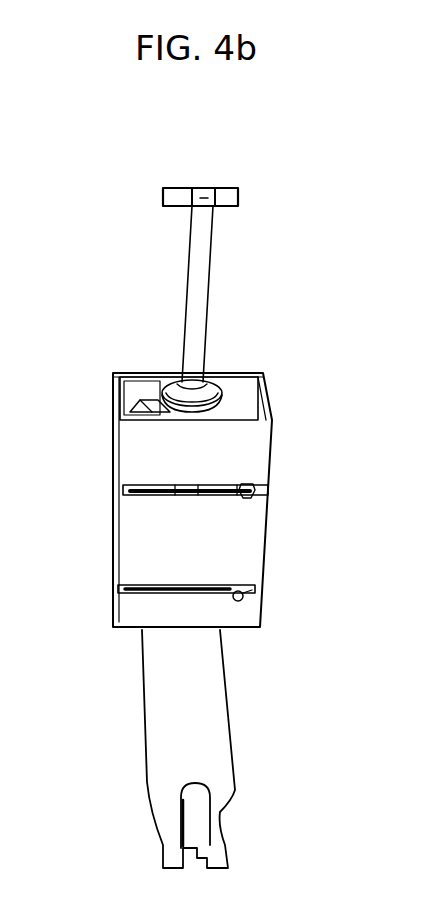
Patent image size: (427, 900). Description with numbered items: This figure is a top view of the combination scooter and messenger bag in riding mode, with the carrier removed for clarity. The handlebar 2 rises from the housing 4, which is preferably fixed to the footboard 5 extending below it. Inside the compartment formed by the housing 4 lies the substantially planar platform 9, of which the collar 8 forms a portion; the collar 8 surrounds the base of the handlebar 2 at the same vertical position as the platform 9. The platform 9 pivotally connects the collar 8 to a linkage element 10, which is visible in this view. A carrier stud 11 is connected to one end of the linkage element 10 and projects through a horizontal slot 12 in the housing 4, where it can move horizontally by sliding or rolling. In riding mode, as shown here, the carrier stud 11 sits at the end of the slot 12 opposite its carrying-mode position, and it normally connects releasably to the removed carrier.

The handlebar 2 is at (205, 245).
The housing 4 is at (230, 462).
The footboard 5 is at (182, 715).
The collar 8 is at (180, 387).
The platform 9 is at (143, 388).
The linkage element 10 is at (138, 410).
The carrier stud 11 is at (252, 500).
The horizontal slot 12 is at (130, 493).